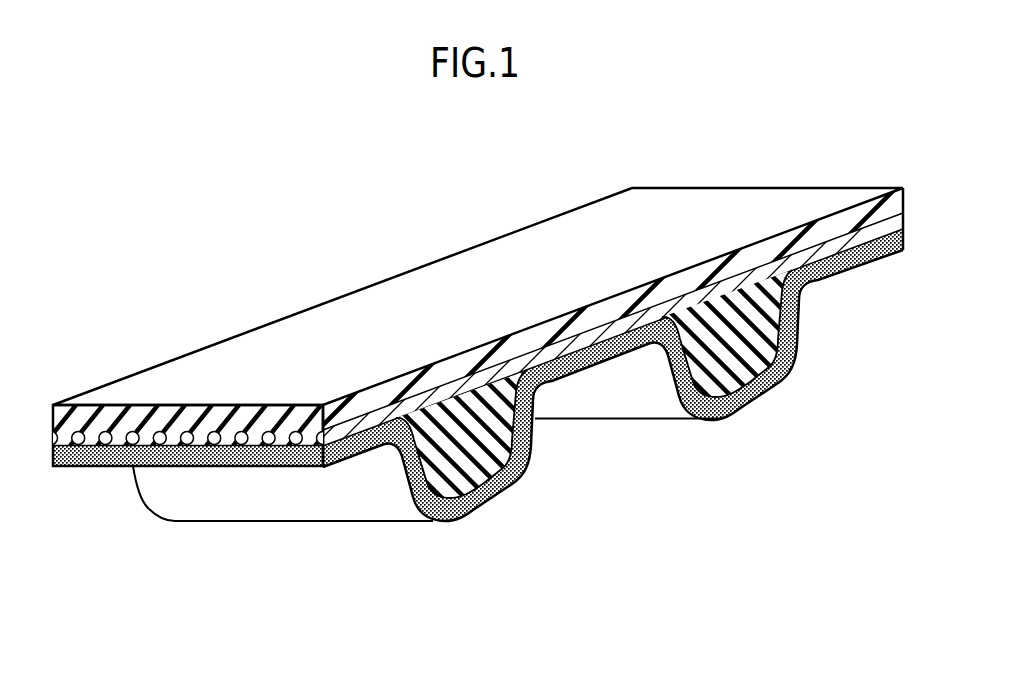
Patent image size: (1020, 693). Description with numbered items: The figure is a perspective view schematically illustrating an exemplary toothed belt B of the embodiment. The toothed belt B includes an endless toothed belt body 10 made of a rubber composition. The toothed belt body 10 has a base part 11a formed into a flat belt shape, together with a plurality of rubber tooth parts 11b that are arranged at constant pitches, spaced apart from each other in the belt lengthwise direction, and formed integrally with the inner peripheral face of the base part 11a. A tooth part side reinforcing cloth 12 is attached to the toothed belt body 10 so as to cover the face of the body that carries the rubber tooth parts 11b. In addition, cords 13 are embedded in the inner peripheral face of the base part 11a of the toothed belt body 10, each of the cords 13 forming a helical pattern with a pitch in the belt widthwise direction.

The toothed belt B is at (386, 211).
The toothed belt body 10 is at (309, 299).
The base part 11a is at (588, 318).
The rubber tooth parts 11b is at (752, 380).
The tooth part side reinforcing cloth 12 is at (95, 463).
The cords 13 is at (240, 431).